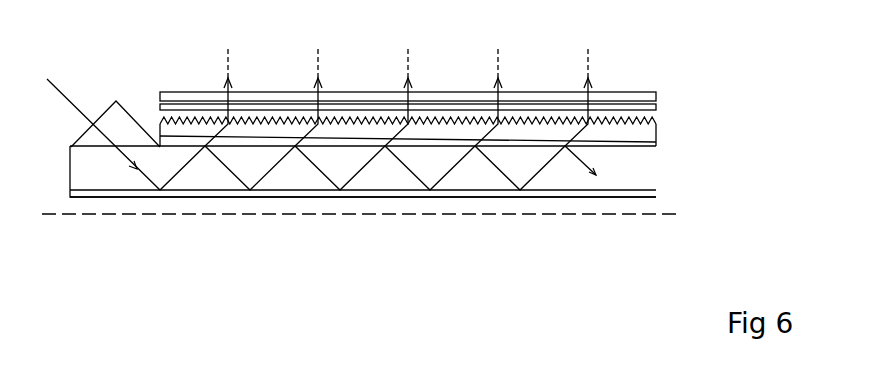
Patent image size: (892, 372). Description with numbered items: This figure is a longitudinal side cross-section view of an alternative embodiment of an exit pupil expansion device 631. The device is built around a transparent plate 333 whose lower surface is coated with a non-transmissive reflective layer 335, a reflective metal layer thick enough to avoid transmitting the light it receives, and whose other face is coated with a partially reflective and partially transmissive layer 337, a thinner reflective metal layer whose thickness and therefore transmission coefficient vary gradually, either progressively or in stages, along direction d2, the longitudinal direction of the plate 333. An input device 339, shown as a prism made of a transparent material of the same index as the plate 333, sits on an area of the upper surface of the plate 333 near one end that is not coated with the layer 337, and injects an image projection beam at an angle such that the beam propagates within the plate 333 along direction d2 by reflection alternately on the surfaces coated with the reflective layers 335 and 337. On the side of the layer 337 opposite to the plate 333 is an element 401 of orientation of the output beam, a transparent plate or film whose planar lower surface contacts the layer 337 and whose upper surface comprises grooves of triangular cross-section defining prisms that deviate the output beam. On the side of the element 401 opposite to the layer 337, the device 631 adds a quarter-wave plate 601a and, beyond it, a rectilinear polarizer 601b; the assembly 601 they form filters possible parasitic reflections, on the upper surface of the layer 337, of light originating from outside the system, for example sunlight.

The transparent plate 333 is at (82, 168).
The non-transmissive reflective layer 335 is at (138, 192).
The partially reflective and partially transmissive layer 337 is at (244, 141).
The input device 339 is at (100, 112).
The element of orientation of the output beam 401 is at (642, 132).
The assembly 601 is at (469, 88).
The quarter-wave plate 601a is at (656, 107).
The rectilinear polarizer 601b is at (656, 95).
The exit pupil expansion device 631 is at (137, 64).
The direction d2 is at (448, 215).